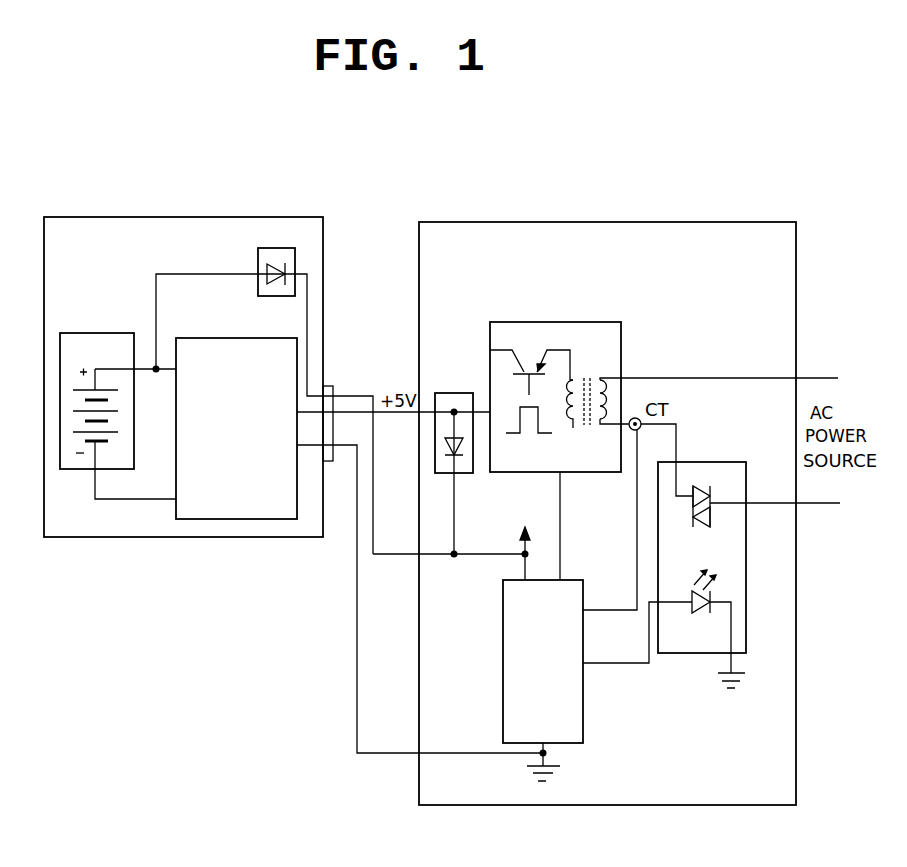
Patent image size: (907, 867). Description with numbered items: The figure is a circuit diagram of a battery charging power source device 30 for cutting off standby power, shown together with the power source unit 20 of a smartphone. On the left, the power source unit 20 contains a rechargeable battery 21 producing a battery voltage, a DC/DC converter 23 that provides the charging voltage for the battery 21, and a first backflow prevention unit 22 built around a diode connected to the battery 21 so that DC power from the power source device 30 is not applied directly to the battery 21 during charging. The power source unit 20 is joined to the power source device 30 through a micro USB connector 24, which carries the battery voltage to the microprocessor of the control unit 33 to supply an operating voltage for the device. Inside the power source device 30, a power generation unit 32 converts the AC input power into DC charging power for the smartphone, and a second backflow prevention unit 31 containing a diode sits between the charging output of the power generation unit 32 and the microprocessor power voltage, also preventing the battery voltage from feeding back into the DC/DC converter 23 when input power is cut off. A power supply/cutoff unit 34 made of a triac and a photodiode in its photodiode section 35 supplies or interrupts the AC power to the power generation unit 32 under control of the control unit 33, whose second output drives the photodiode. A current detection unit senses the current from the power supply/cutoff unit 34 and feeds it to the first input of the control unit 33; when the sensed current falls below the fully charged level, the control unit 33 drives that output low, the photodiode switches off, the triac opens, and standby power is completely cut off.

The power source unit 20 is at (172, 217).
The rechargeable battery 21 is at (102, 333).
The first backflow prevention unit 22 is at (258, 262).
The DC/DC converter 23 is at (234, 338).
The micro USB connector 24 is at (331, 386).
The power source device 30 is at (598, 222).
The second backflow prevention unit 31 is at (452, 393).
The power generation unit 32 is at (560, 322).
The control unit 33 is at (503, 666).
The power supply/cutoff unit 34 is at (700, 462).
The power supply/cutoff unit photodiode section 35 is at (720, 590).